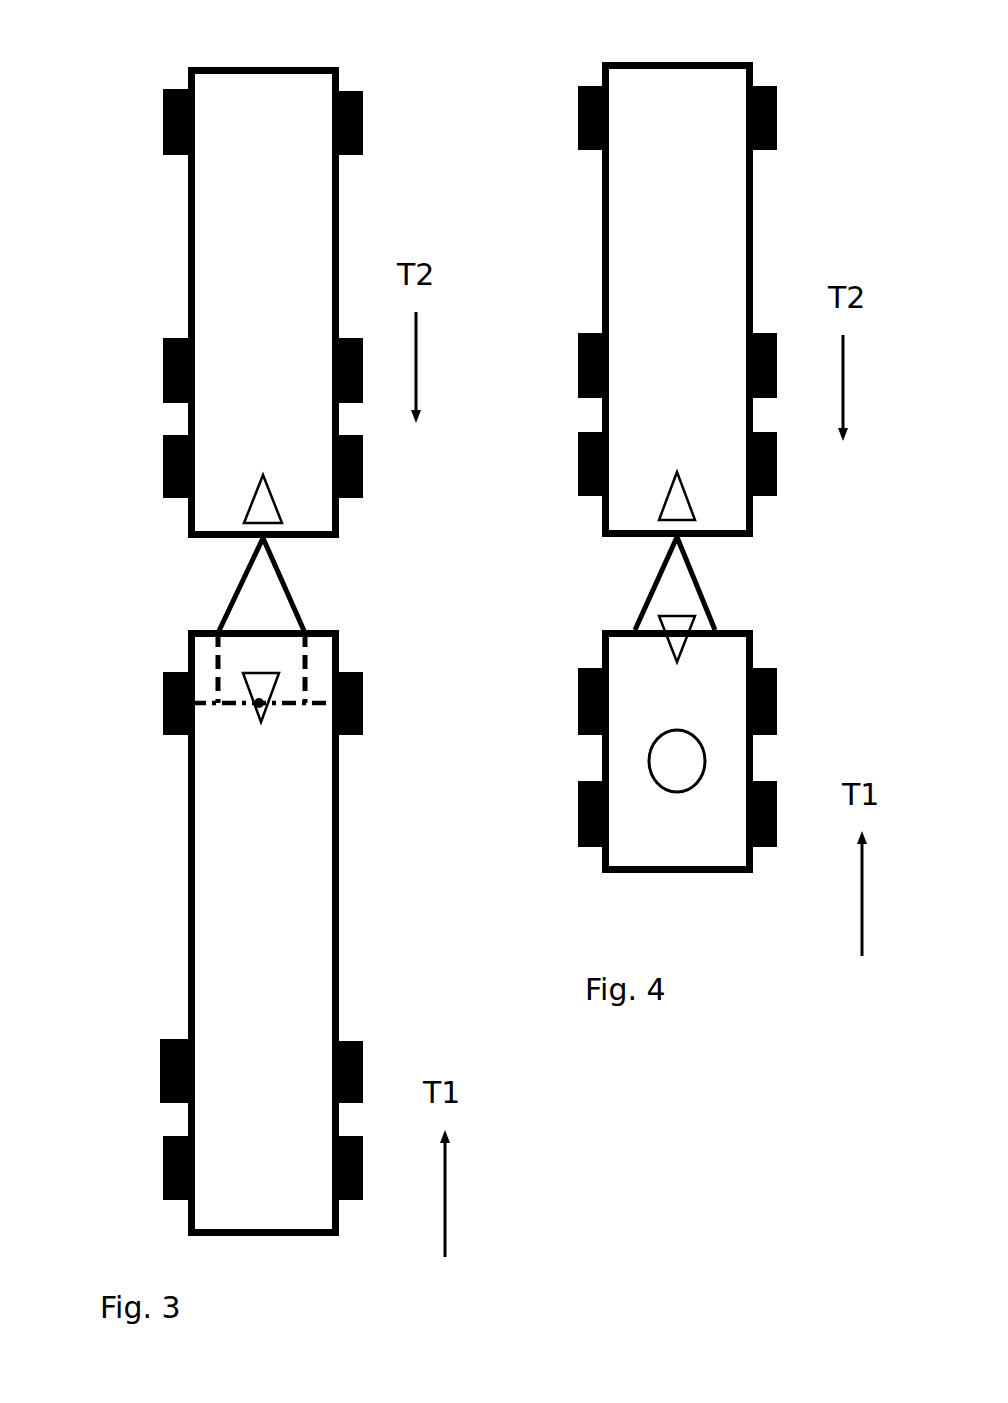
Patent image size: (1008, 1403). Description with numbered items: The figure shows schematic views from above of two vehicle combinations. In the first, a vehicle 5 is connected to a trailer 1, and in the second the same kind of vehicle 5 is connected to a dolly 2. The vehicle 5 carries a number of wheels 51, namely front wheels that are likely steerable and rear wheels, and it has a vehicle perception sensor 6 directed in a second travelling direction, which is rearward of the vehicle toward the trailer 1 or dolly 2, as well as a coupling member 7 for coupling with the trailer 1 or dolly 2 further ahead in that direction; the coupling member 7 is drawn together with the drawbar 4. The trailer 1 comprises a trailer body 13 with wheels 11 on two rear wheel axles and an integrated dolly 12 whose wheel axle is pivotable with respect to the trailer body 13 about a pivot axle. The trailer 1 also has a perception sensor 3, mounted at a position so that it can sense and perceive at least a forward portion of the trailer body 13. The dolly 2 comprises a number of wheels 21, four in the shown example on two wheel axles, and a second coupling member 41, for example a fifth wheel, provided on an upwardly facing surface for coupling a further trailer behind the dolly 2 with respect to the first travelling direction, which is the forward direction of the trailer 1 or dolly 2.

In FIG. 3, the trailer 1 is at (395, 1018).
In FIG. 4, the dolly 2 is at (723, 899).
In FIG. 3, the perception sensor 3 is at (257, 673).
In FIG. 4, the perception sensor 3 is at (688, 616).
In FIG. 3, the drawbar 4 is at (163, 593).
In FIG. 4, the drawbar 4 is at (577, 593).
In FIG. 3, the vehicle 5 is at (188, 308).
In FIG. 4, the vehicle 5 is at (603, 263).
In FIG. 3, the vehicle perception sensor 6 is at (250, 505).
In FIG. 4, the vehicle perception sensor 6 is at (662, 503).
In FIG. 3, the coupling member 7 is at (260, 538).
In FIG. 4, the coupling member 7 is at (675, 538).
In FIG. 3, the wheels 11 is at (162, 1082).
In FIG. 3, the integrated dolly 12 is at (234, 705).
In FIG. 3, the trailer body 13 is at (339, 838).
In FIG. 4, the wheels 21 is at (577, 825).
In FIG. 4, the second coupling member 41 is at (707, 768).
In FIG. 3, the wheels 51 is at (162, 130).
In FIG. 4, the wheels 51 is at (578, 130).